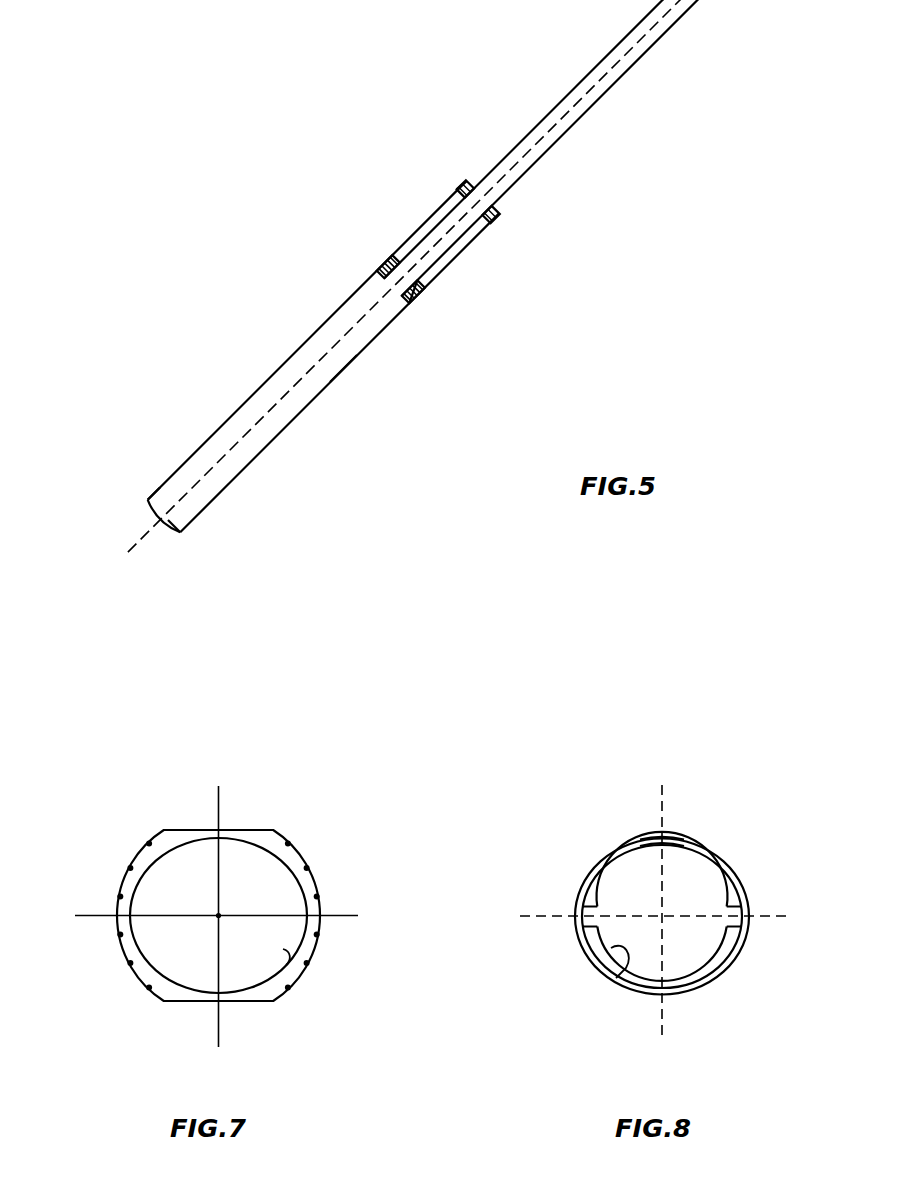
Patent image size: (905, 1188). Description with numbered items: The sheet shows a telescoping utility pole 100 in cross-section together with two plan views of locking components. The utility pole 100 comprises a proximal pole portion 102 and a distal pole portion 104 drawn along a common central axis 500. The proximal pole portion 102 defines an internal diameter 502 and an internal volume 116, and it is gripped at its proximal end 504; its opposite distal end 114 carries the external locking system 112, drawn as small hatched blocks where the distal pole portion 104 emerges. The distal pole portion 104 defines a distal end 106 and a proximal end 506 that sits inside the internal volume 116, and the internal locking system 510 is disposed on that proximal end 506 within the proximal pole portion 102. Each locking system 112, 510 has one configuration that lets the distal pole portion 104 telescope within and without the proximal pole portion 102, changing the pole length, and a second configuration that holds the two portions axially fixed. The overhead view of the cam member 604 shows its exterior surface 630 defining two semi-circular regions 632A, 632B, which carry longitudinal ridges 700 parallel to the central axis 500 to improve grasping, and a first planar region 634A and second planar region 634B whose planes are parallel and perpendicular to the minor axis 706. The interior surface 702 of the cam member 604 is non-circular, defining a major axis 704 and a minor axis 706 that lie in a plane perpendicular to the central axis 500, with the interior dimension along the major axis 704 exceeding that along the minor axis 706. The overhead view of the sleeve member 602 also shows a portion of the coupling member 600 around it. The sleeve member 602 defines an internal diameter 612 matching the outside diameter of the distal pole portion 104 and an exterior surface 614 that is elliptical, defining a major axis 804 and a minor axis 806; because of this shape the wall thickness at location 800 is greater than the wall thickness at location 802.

In FIG. 5, the utility pole 100 is at (262, 172).
In FIG. 5, the proximal pole portion 102 is at (295, 418).
In FIG. 5, the distal pole portion 104 is at (610, 87).
In FIG. 5, the distal end 106 is at (745, 0).
In FIG. 5, the external locking system 112 is at (460, 176).
In FIG. 5, the distal end 114 is at (443, 183).
In FIG. 5, the internal volume 116 is at (357, 340).
In FIG. 5, the central axis 500 is at (140, 538).
In FIG. 7, the central axis 500 is at (219, 914).
In FIG. 5, the internal diameter 502 is at (167, 528).
In FIG. 5, the proximal end 504 is at (141, 493).
In FIG. 5, the proximal end 506 is at (395, 305).
In FIG. 5, the internal locking system 510 is at (383, 278).
In FIG. 8, the coupling member 600 is at (742, 877).
In FIG. 8, the sleeve member 602 is at (710, 865).
In FIG. 7, the cam member 604 is at (231, 917).
In FIG. 8, the internal diameter 612 is at (612, 980).
In FIG. 8, the exterior surface 614 is at (682, 843).
In FIG. 7, the exterior surface 630 is at (162, 832).
In FIG. 7, the semi-circular region 632A is at (132, 852).
In FIG. 7, the semi-circular region 632B is at (321, 880).
In FIG. 7, the first planar region 634A is at (254, 828).
In FIG. 7, the second planar region 634B is at (177, 1004).
In FIG. 7, the longitudinal ridges 700 is at (319, 935).
In FIG. 7, the interior surface 702 is at (288, 979).
In FIG. 7, the major axis 704 is at (105, 918).
In FIG. 7, the minor axis 706 is at (223, 797).
In FIG. 8, the location 800 is at (732, 898).
In FIG. 8, the location 802 is at (655, 840).
In FIG. 8, the major axis 804 is at (542, 914).
In FIG. 8, the minor axis 806 is at (664, 1014).